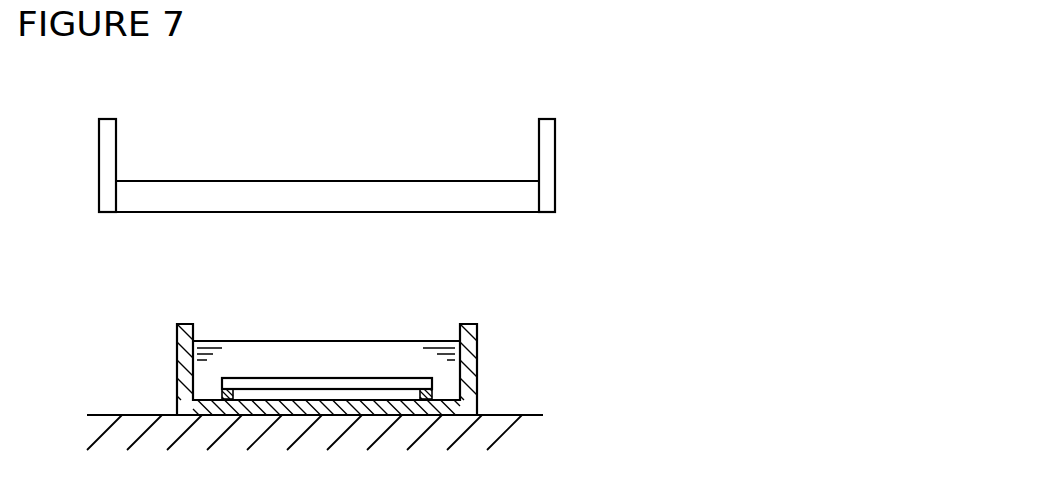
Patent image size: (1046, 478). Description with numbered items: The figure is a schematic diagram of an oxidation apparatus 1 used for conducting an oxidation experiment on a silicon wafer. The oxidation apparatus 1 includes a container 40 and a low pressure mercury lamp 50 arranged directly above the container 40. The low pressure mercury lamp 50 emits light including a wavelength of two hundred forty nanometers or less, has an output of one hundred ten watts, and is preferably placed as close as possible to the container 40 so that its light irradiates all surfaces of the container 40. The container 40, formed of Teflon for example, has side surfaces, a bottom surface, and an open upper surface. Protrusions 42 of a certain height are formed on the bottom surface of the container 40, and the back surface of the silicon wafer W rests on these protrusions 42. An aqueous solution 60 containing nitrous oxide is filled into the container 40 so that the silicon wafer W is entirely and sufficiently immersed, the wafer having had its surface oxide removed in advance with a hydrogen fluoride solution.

The oxidation apparatus 1 is at (565, 124).
The low pressure mercury lamp 50 is at (555, 193).
The container 40 is at (477, 341).
The protrusions 42 is at (178, 393).
The aqueous solution 60 is at (275, 315).
The silicon wafer W is at (330, 378).